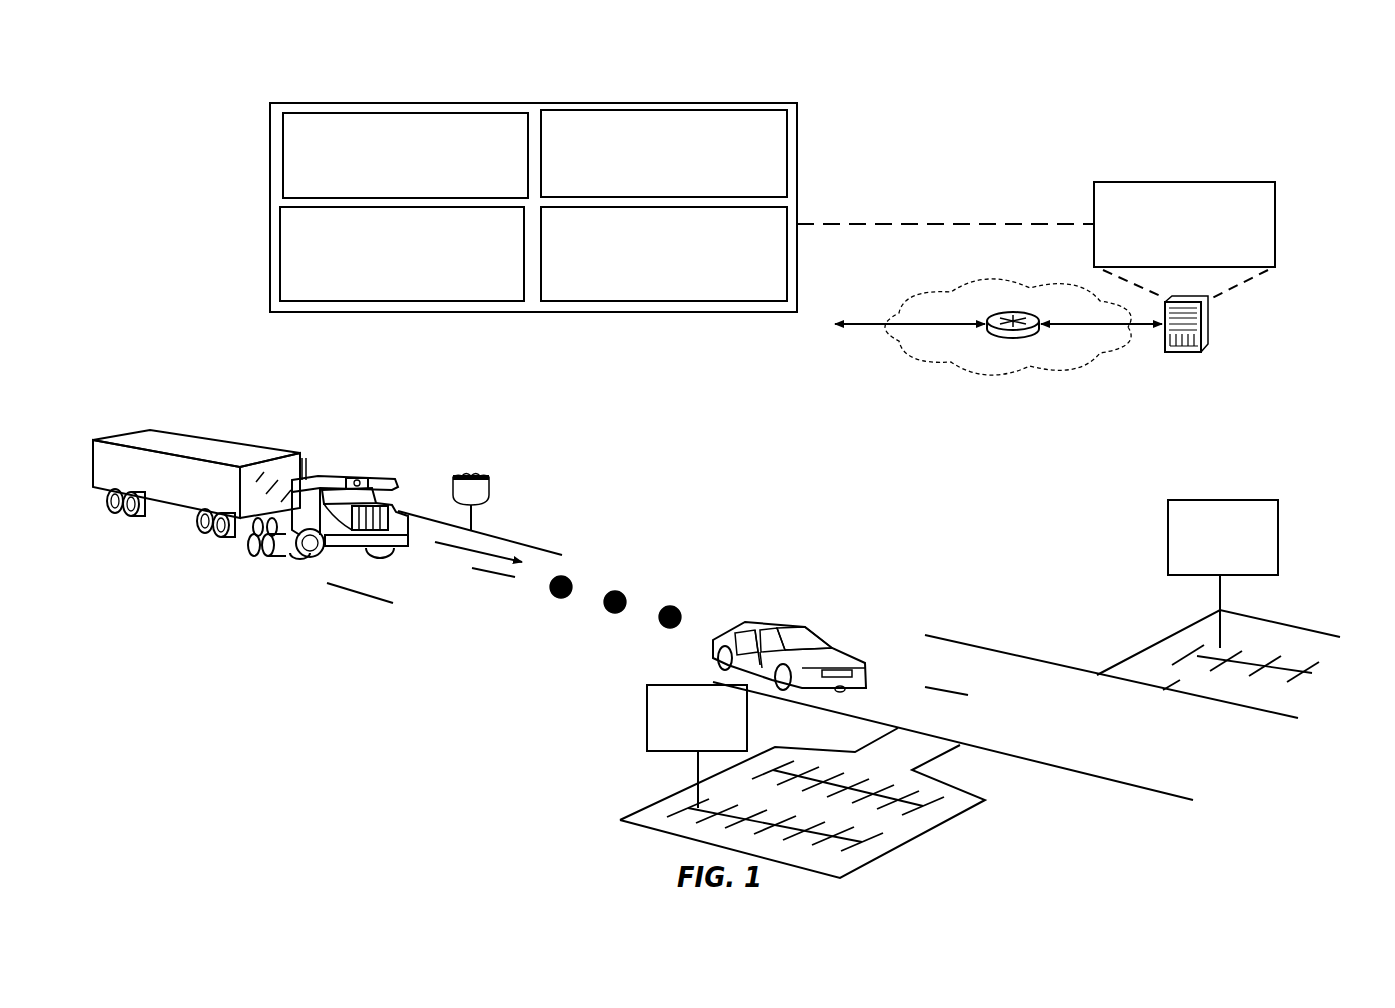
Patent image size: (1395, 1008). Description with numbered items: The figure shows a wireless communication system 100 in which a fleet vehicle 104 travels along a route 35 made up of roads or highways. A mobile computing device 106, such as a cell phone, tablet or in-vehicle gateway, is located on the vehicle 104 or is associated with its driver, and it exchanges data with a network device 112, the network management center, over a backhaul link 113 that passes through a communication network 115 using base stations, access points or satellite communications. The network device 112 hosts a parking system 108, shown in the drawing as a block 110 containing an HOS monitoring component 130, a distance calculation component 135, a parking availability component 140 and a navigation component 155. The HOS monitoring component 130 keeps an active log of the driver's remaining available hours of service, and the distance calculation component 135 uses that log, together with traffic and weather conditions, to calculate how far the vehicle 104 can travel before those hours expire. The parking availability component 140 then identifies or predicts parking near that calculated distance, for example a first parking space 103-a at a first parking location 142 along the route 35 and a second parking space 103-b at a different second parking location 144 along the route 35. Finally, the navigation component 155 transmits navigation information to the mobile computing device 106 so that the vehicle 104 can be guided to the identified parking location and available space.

The system 100 is at (216, 132).
The computing device / component block 110 is at (270, 238).
The HOS monitoring component 130 is at (420, 193).
The parking availability component 140 is at (681, 191).
The distance calculation component 135 is at (418, 291).
The navigation component 155 is at (681, 291).
The parking system 108 is at (1200, 248).
The backhaul link 113 is at (858, 327).
The network 115 is at (1085, 327).
The network device 112 is at (1183, 355).
The fleet vehicle 104 is at (377, 558).
The mobile computing device 106 is at (325, 488).
The route 35 is at (485, 550).
The first parking location 142 is at (965, 838).
The second parking location 144 is at (1143, 635).
The first parking space 103-a is at (723, 741).
The second parking space 103-b is at (1250, 561).